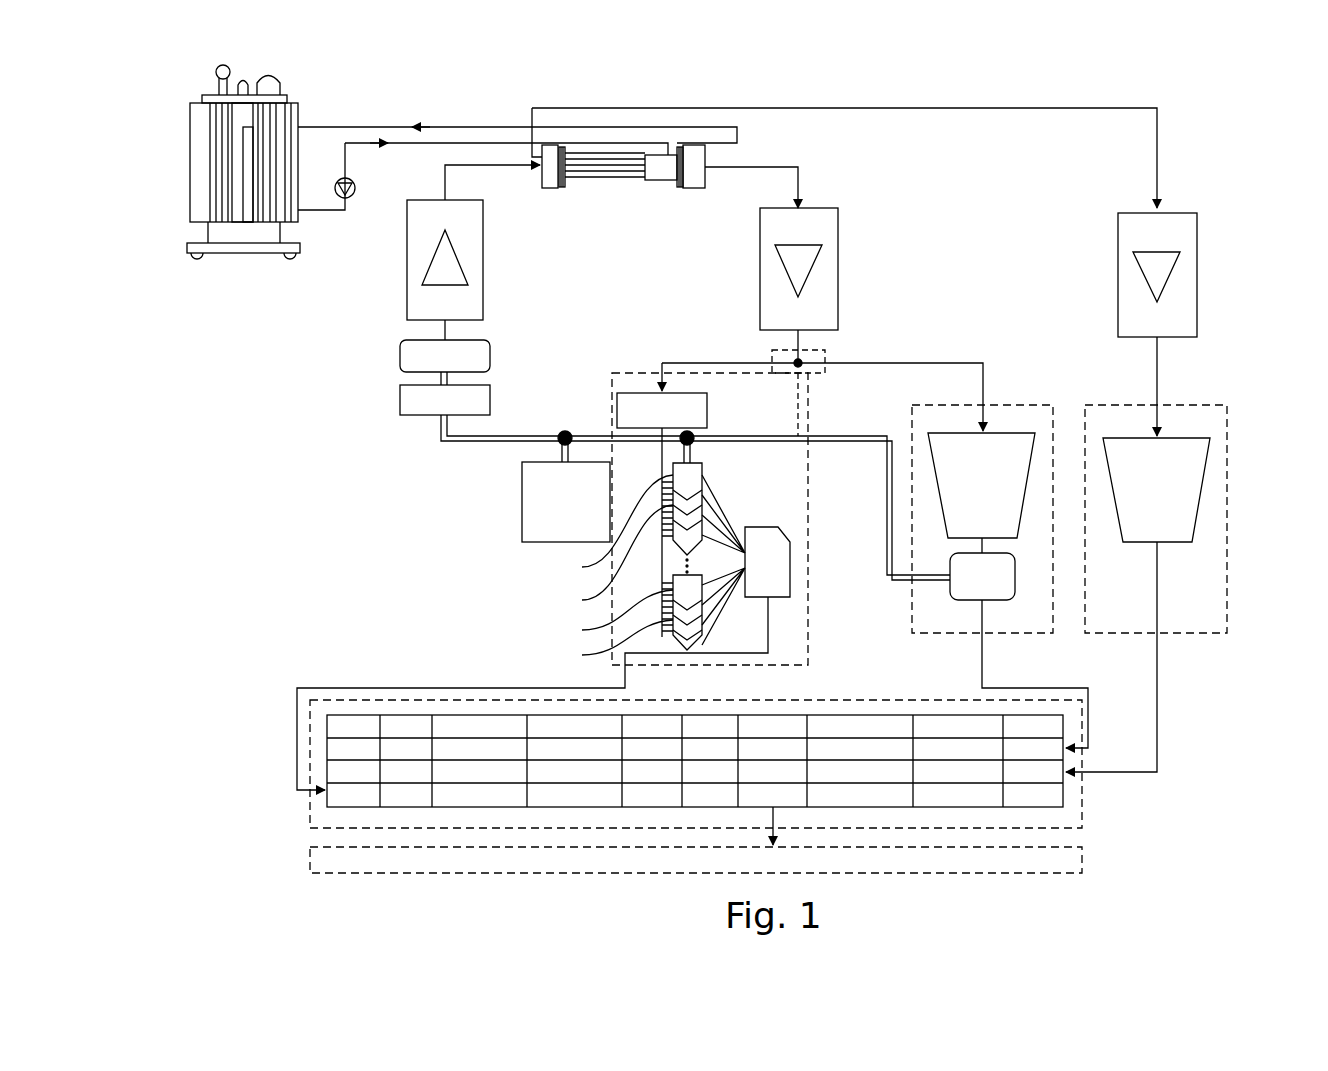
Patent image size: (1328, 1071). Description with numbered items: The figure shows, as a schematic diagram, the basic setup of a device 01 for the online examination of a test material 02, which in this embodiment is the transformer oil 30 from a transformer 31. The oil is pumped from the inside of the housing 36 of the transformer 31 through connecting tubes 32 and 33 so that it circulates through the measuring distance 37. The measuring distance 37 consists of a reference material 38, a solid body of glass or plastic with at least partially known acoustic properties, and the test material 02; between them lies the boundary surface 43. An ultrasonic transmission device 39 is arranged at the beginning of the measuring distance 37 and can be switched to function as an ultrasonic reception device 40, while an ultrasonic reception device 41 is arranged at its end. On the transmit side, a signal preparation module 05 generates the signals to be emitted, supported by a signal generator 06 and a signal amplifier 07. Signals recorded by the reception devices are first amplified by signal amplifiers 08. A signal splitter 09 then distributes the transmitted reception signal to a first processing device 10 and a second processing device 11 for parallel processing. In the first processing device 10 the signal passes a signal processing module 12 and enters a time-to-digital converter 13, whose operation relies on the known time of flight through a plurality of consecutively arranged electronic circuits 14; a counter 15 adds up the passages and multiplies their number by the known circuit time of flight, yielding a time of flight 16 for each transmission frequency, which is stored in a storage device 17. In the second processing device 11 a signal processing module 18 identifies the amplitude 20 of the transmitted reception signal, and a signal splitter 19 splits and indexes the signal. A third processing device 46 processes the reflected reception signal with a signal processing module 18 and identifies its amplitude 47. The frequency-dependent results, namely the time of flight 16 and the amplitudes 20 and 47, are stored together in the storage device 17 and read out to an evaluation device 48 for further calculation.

The device 01 is at (1195, 152).
The test material 02 is at (675, 182).
The signal preparation module 05 is at (400, 400).
The signal generator 06 is at (400, 355).
The signal amplifier 07 is at (472, 282).
The signal amplifiers 08 is at (832, 252).
The signal splitter 09 is at (826, 356).
The first processing device 10 is at (612, 380).
The second processing device 11 is at (995, 404).
The signal processing module 12 is at (700, 408).
The time-to-digital converter 13 is at (745, 522).
The electronic circuits 14 is at (614, 571).
The counter 15 is at (790, 562).
The time of flight 16 is at (370, 688).
The storage device 17 is at (842, 700).
The signal processing module 18 is at (992, 510).
The signal splitter 19 is at (992, 572).
The amplitude of the transmitted ultrasonic reception signal 20 is at (1048, 686).
The transformer oil 30 is at (658, 183).
The transformer 31 is at (285, 76).
The connecting tube 32 is at (445, 125).
The connecting tube 33 is at (410, 150).
The housing 36 is at (195, 180).
The measuring distance 37 is at (642, 224).
The reference material 38 is at (592, 182).
The ultrasonic transmission device 39 is at (352, 198).
The ultrasonic reception device 40 is at (540, 170).
The ultrasonic reception device 41 is at (698, 186).
The boundary surface 43 is at (660, 152).
The third processing device 46 is at (1205, 404).
The amplitude of the reflected ultrasonic reception signal 47 is at (1160, 690).
The evaluation device 48 is at (1082, 860).